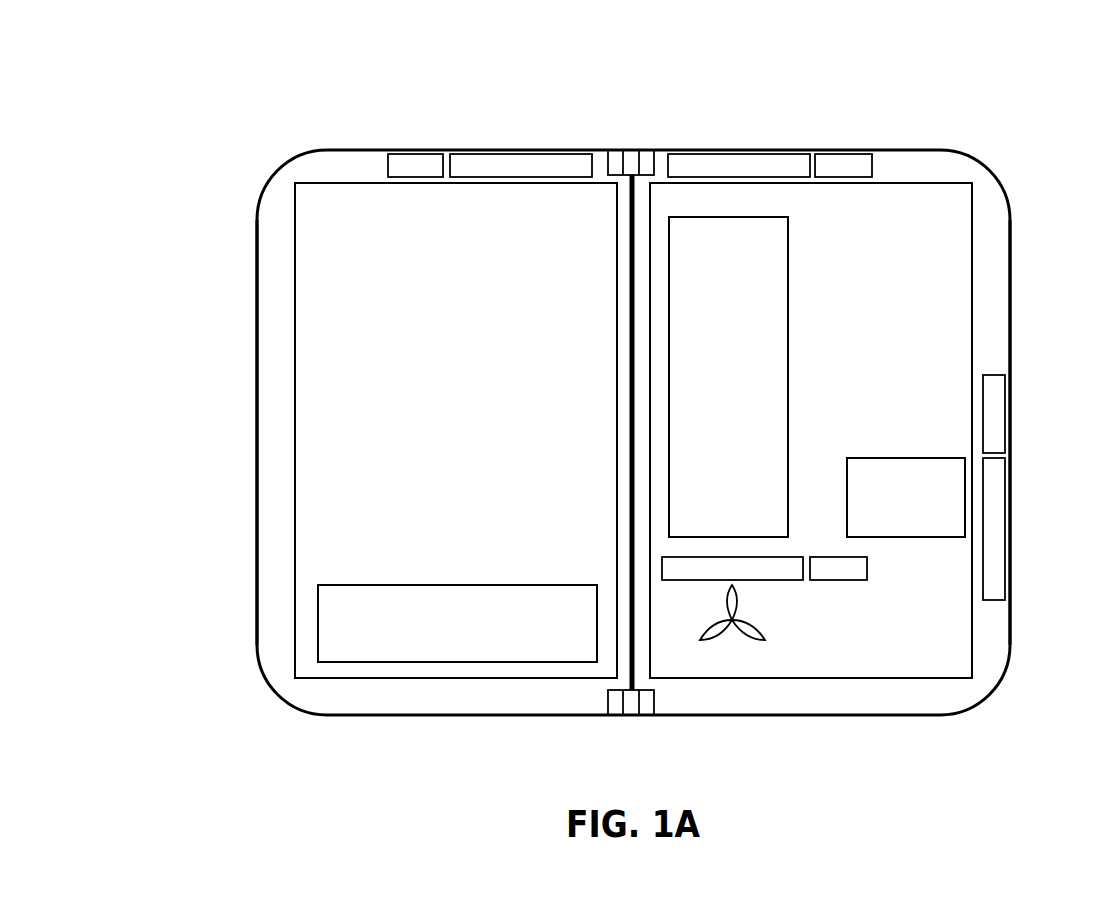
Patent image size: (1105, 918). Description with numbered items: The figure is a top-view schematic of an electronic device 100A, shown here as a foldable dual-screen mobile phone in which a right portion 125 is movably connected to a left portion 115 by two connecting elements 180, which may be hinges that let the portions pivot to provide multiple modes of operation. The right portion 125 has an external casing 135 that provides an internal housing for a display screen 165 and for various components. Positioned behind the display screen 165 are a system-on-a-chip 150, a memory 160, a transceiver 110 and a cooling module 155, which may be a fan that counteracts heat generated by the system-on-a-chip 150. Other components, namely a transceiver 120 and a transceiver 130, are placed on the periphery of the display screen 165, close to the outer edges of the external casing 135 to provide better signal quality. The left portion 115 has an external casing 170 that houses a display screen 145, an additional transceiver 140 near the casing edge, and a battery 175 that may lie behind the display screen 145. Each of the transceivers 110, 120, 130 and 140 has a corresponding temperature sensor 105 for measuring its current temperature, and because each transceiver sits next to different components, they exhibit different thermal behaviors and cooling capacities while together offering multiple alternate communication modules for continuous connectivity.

The electronic device 100A is at (205, 59).
The left portion 115 is at (353, 126).
The right portion 125 is at (931, 133).
The connecting elements 180 is at (630, 149).
The temperature sensor 105 is at (696, 367).
The transceiver 140 is at (521, 165).
The transceiver 130 is at (739, 165).
The display screen 165 is at (973, 296).
The external casing 135 is at (1011, 347).
The external casing 170 is at (256, 355).
The display screen 145 is at (294, 555).
The system-on-a-chip 150 is at (728, 377).
The memory 160 is at (906, 497).
The transceiver 120 is at (994, 529).
The battery 175 is at (457, 623).
The transceiver 110 is at (732, 568).
The cooling module 155 is at (753, 627).